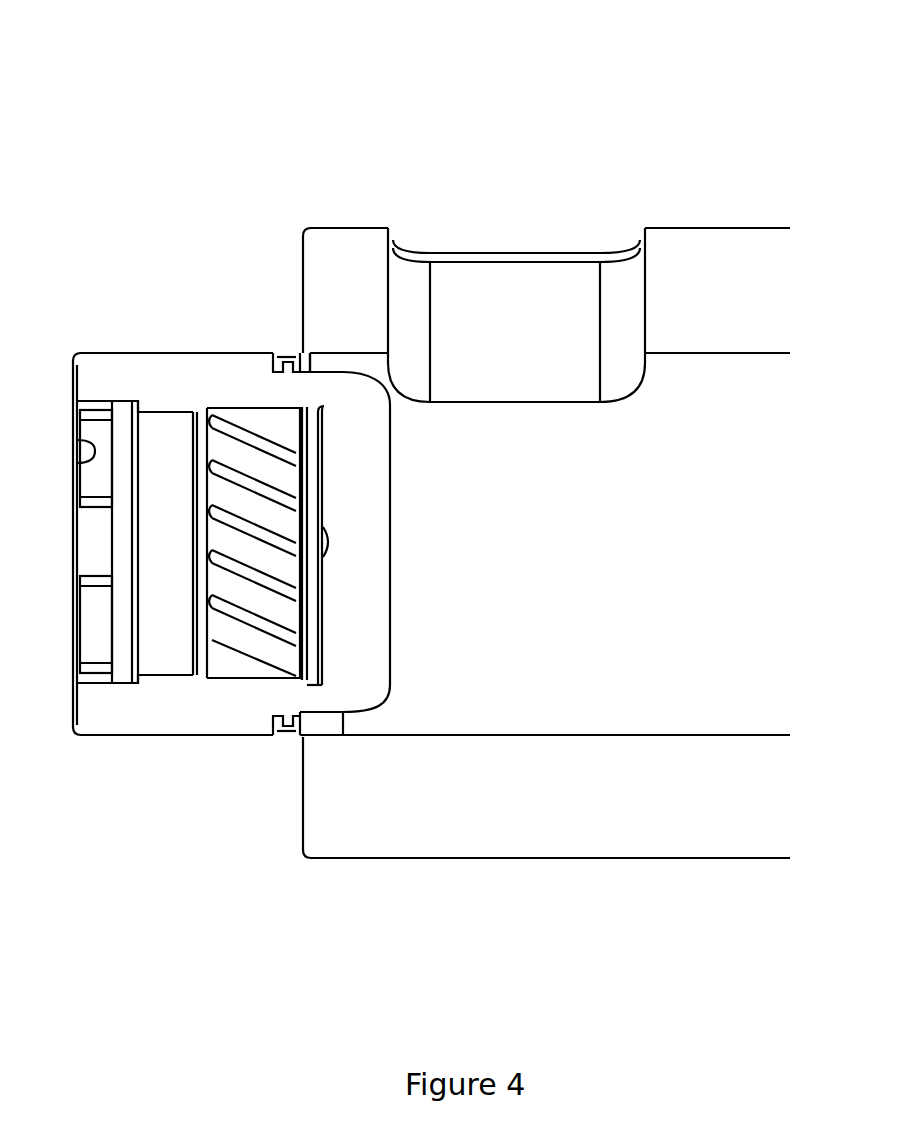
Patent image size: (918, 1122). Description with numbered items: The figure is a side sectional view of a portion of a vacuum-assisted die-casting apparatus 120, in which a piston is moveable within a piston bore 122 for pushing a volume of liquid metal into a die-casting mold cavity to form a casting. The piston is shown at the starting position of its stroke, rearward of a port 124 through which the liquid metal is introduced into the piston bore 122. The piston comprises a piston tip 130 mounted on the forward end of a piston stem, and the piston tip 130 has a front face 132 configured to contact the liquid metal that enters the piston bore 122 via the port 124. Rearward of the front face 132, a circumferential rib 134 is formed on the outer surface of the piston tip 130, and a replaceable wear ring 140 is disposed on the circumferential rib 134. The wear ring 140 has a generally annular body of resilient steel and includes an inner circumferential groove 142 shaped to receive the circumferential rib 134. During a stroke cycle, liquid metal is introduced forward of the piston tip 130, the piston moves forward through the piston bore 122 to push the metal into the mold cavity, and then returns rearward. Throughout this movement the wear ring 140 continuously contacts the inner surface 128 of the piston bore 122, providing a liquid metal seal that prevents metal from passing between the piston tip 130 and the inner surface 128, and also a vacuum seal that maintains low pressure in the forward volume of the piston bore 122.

The vacuum-assisted die-casting apparatus 120 is at (764, 66).
The piston bore 122 is at (726, 547).
The port 124 is at (507, 226).
The inner surface 128 is at (745, 360).
The piston tip 130 is at (185, 737).
The front face 132 is at (397, 642).
The circumferential rib 134 is at (290, 737).
The wear ring 140 is at (329, 352).
The inner circumferential groove 142 is at (288, 350).